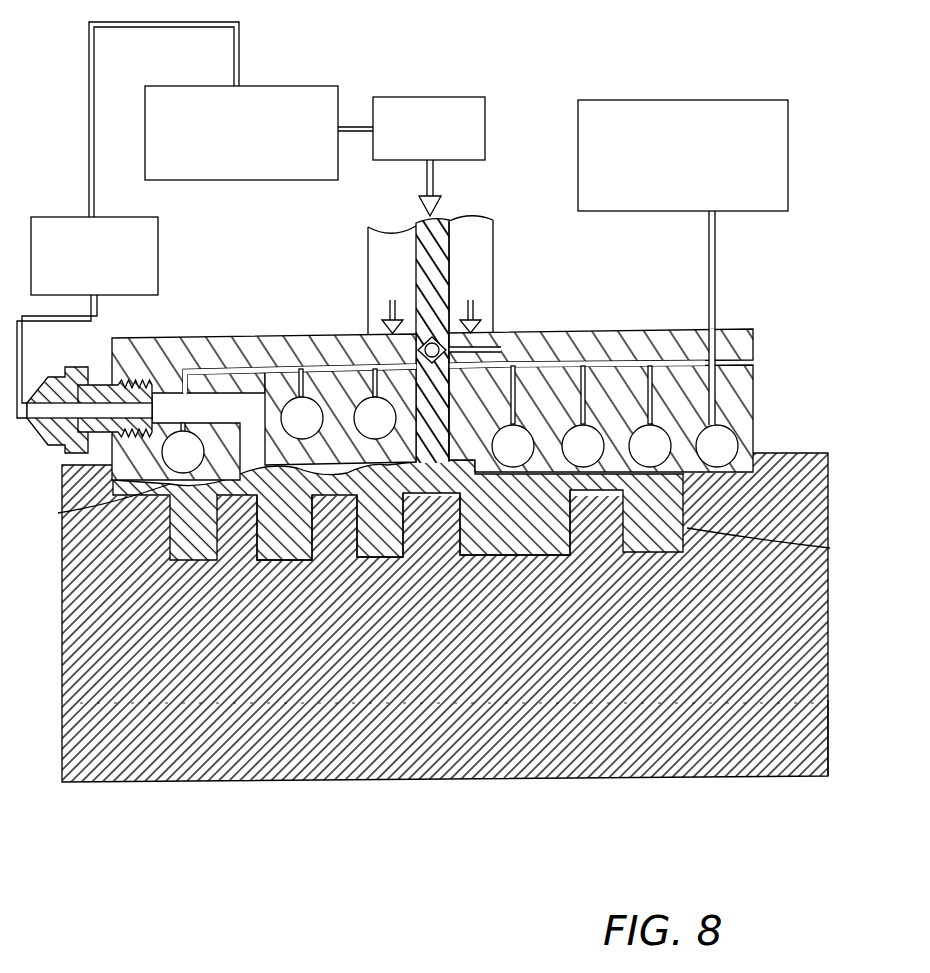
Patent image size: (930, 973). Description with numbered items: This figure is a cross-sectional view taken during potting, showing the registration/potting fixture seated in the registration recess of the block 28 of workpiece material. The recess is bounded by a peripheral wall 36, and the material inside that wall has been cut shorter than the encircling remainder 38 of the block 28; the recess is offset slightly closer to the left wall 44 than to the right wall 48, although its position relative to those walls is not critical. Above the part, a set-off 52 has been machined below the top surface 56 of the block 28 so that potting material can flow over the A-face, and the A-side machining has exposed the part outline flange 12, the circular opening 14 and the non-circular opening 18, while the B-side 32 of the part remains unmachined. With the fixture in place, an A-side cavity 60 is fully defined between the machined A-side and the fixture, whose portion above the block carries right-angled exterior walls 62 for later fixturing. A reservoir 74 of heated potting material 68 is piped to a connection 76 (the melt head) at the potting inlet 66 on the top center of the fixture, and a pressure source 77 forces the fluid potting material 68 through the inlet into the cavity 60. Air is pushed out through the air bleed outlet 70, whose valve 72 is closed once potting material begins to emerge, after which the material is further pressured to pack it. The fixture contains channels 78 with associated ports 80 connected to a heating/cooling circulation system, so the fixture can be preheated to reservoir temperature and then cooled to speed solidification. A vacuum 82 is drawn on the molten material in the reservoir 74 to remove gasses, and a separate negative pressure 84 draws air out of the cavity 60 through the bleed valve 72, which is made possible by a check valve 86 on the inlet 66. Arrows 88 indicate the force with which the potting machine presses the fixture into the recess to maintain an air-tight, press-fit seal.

The part outline flange 12 is at (240, 518).
The circular opening 14 is at (375, 538).
The non-circular opening 18 is at (513, 518).
The block of workpiece material 28 is at (567, 778).
The B-side 32 is at (390, 793).
The peripheral wall 36 is at (750, 465).
The encircling remainder 38 is at (770, 453).
The left wall 44 is at (62, 690).
The right wall 48 is at (828, 740).
The set-off 52 is at (99, 505).
The top surface of the block 56 is at (772, 452).
The A-side cavity 60 is at (772, 546).
The exterior wall 62 is at (755, 346).
The potting inlet 66 is at (452, 308).
The potting material 68 is at (430, 266).
The air bleed outlet 70 is at (100, 384).
The valve 72 is at (50, 396).
The reservoir 74 is at (247, 84).
The connection 76 is at (385, 270).
The pressure source 77 is at (435, 96).
The channels 78 is at (284, 395).
The ports 80 is at (716, 330).
The vacuum 82 is at (170, 28).
The negative pressure 84 is at (97, 318).
The check valve 86 is at (460, 350).
The arrows 88 is at (384, 322).